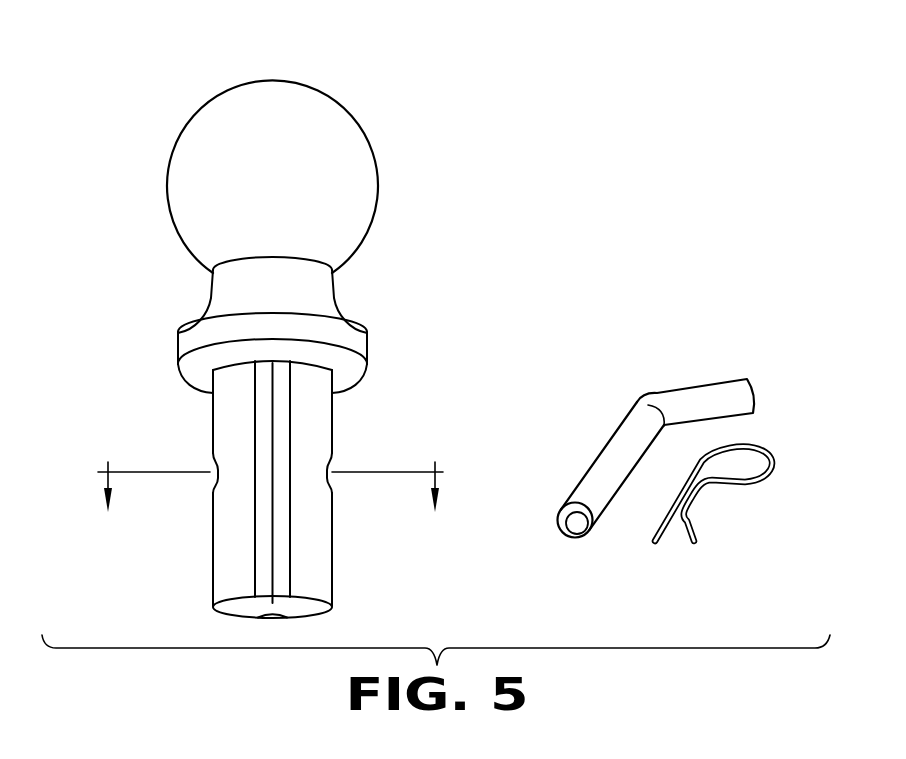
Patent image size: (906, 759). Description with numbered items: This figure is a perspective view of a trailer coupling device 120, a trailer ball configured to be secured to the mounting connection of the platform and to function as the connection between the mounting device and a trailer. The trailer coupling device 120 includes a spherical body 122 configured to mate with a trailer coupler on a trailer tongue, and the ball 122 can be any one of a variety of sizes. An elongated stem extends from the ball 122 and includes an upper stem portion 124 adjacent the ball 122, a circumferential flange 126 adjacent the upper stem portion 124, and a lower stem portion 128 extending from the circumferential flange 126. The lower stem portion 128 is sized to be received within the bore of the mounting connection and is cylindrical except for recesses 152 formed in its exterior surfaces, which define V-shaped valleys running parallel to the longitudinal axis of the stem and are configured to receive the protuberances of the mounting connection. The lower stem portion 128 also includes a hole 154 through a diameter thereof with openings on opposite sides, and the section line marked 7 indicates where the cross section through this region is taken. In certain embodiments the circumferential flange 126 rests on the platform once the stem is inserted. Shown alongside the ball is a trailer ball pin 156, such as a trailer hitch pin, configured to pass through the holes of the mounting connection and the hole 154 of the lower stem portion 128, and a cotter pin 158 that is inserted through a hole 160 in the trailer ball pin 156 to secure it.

The trailer coupling device 120 is at (418, 154).
The spherical body 122 is at (259, 81).
The upper stem portion 124 is at (212, 300).
The circumferential flange 126 is at (178, 354).
The lower stem portion 128 is at (333, 562).
The recesses 152 is at (268, 576).
The hole 154 is at (213, 478).
The trailer ball pin 156 is at (673, 393).
The cotter pin 158 is at (743, 478).
The hole 160 is at (612, 506).
The section line 7- 7 is at (270, 502).